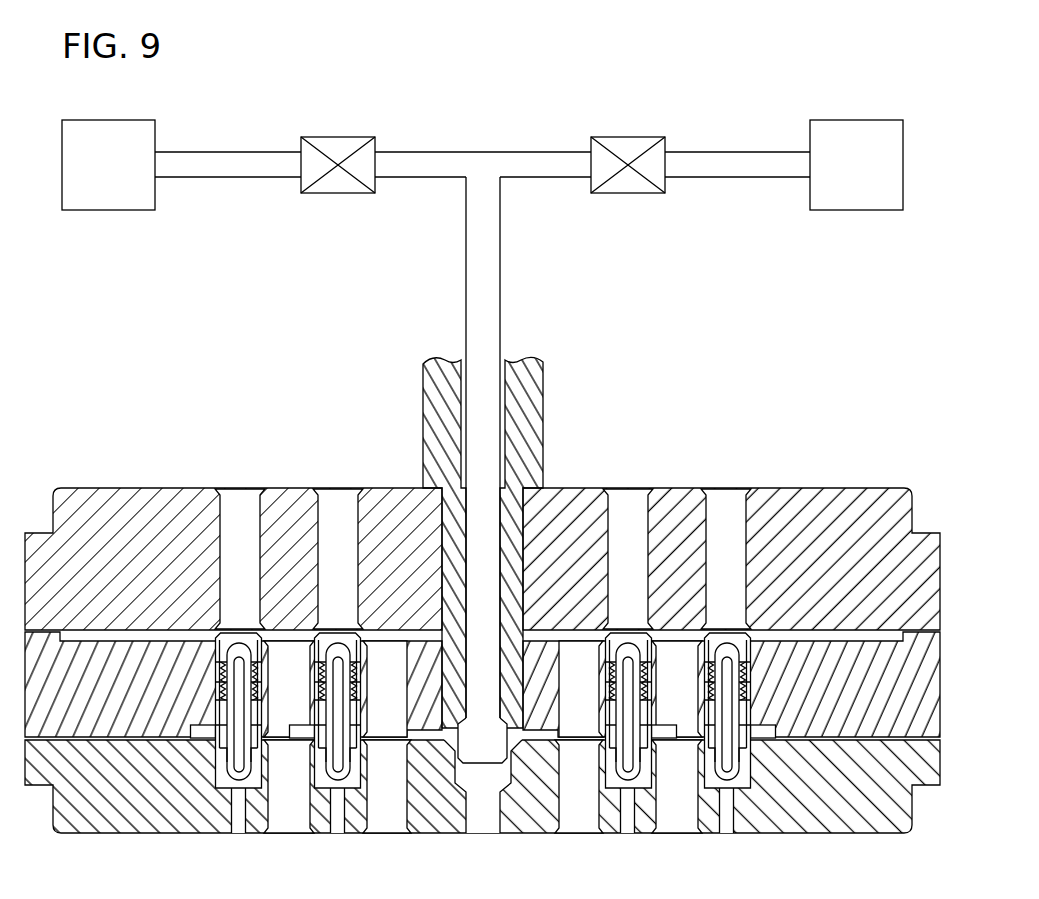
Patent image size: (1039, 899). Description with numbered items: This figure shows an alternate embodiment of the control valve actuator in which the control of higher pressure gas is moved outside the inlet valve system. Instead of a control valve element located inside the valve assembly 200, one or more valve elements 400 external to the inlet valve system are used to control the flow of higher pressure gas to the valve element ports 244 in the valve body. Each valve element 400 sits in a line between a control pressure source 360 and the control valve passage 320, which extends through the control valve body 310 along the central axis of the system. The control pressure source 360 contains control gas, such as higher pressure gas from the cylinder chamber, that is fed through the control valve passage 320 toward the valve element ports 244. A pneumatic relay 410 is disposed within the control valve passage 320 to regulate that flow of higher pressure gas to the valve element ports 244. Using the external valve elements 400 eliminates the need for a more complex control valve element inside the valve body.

The valve assembly 200 is at (837, 461).
The valve element ports 244 is at (338, 792).
The control valve body 310 is at (532, 412).
The control valve passage 320 is at (483, 268).
The control pressure source 360 is at (92, 178).
The valve element 400 is at (626, 148).
The pneumatic relay 410 is at (483, 745).